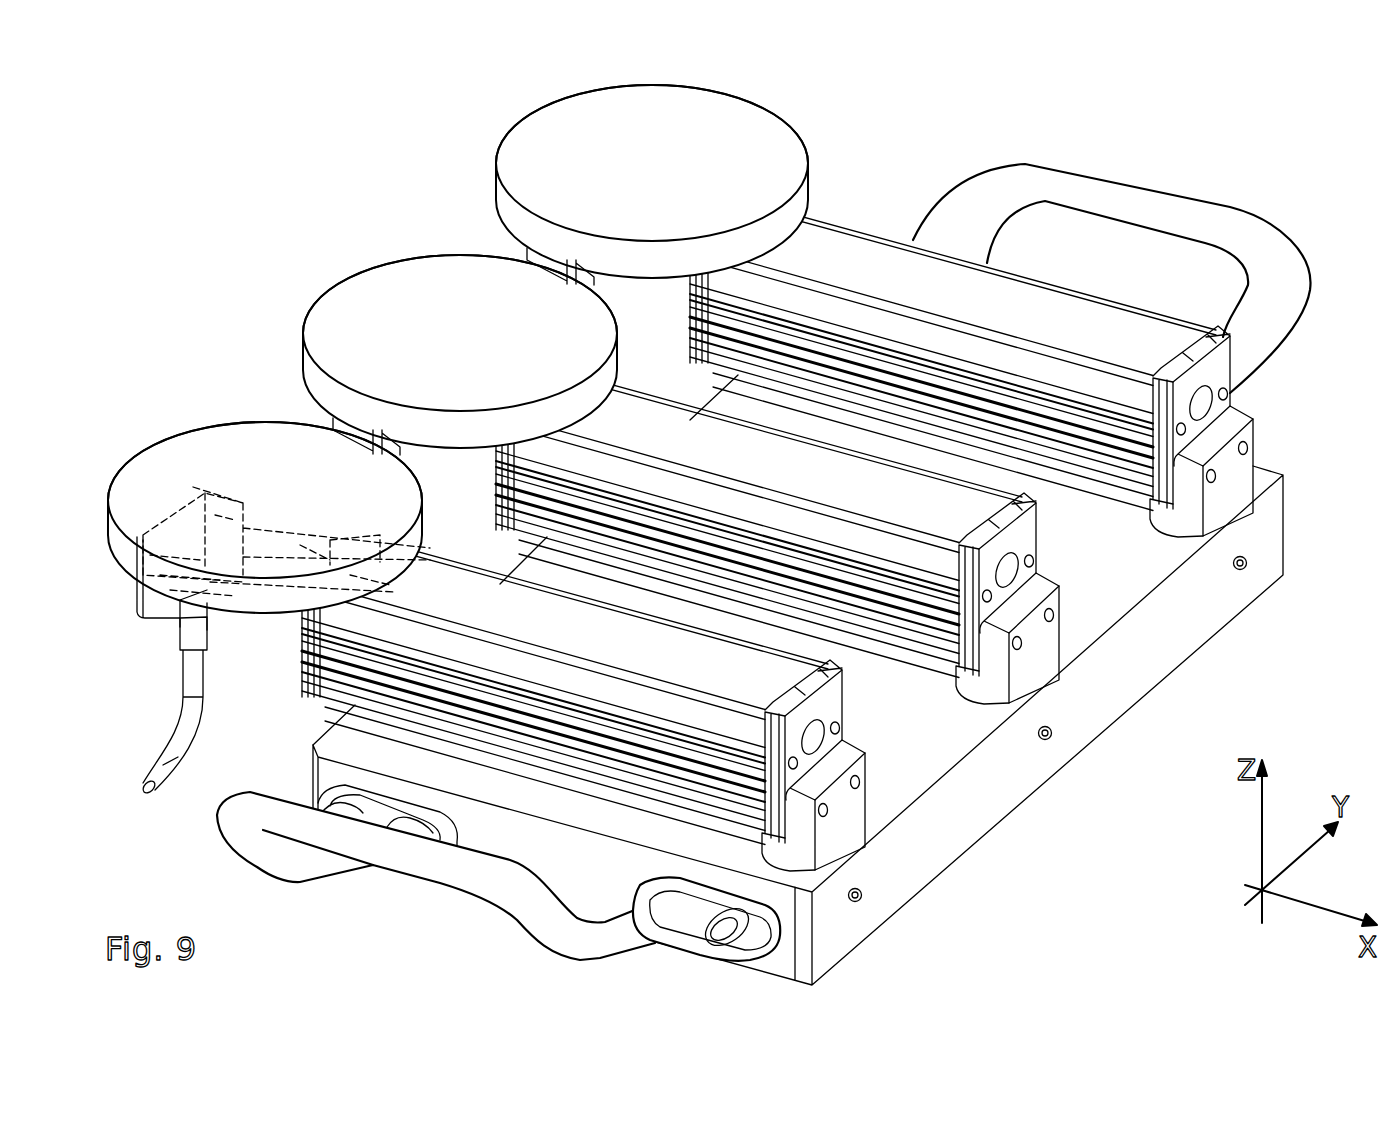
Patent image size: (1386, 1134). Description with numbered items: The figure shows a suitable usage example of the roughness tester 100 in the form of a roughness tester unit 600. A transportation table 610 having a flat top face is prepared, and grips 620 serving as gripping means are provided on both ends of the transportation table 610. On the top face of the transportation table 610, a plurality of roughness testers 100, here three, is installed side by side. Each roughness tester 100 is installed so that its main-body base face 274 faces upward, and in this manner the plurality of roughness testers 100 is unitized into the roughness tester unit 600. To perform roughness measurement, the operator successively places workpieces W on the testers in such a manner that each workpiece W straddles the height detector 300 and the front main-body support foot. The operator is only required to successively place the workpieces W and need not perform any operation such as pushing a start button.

The workpiece W is at (547, 143).
The roughness tester 100 is at (1082, 302).
The main-body base face 274 is at (1153, 323).
The height detector 300 is at (163, 605).
The roughness tester unit 600 is at (731, 523).
The transportation table 610 is at (1275, 527).
The grip 620 is at (1175, 197).